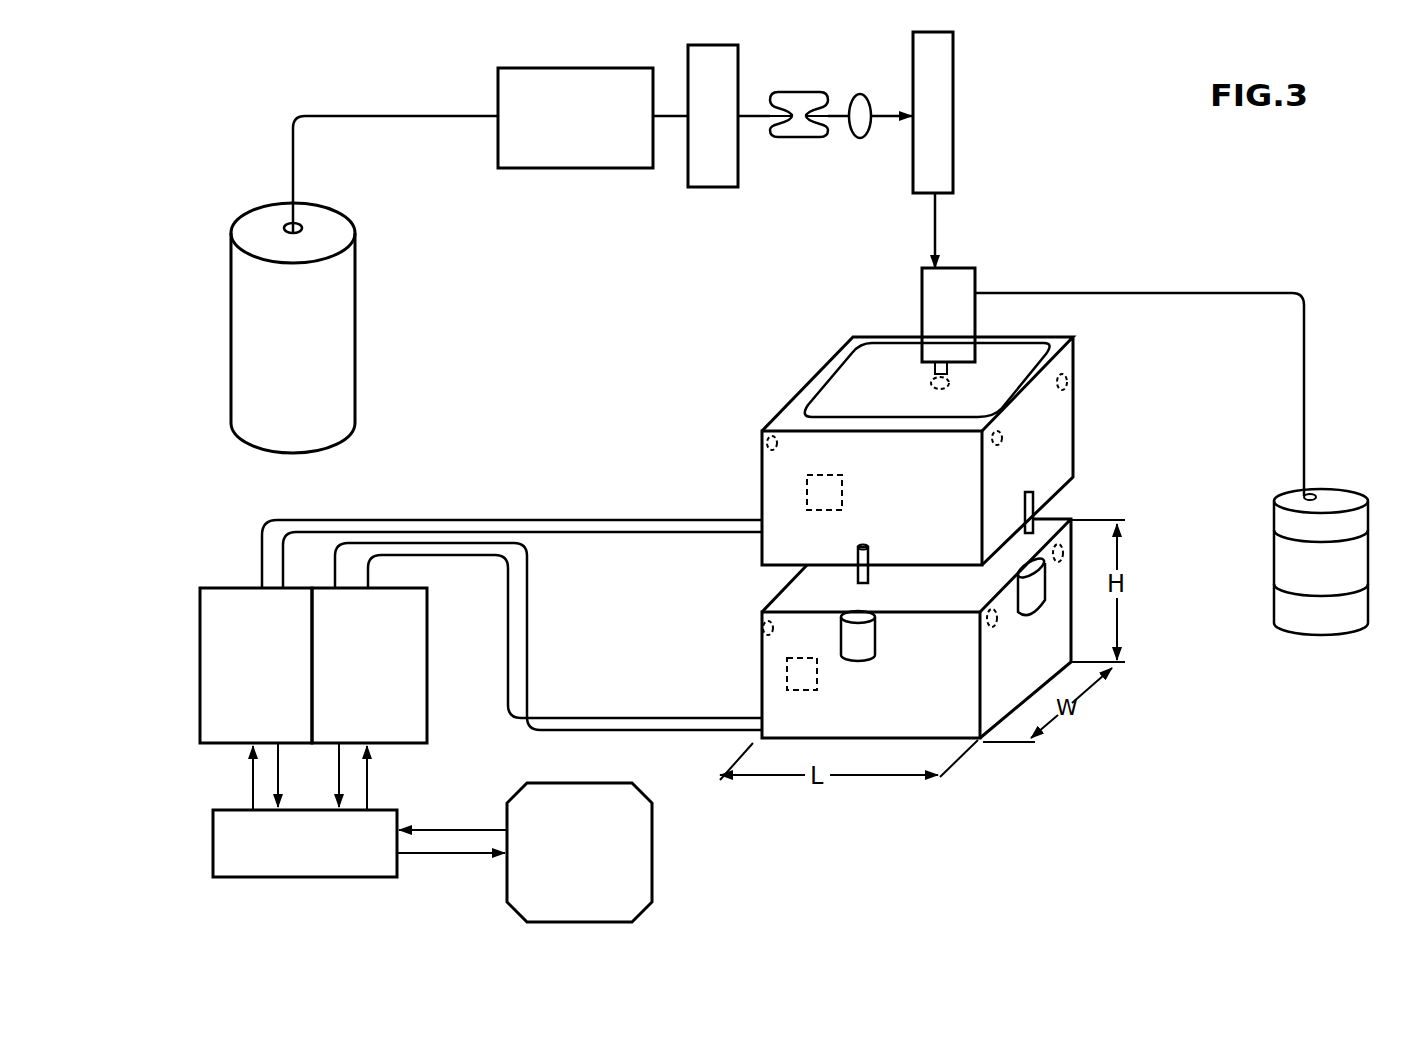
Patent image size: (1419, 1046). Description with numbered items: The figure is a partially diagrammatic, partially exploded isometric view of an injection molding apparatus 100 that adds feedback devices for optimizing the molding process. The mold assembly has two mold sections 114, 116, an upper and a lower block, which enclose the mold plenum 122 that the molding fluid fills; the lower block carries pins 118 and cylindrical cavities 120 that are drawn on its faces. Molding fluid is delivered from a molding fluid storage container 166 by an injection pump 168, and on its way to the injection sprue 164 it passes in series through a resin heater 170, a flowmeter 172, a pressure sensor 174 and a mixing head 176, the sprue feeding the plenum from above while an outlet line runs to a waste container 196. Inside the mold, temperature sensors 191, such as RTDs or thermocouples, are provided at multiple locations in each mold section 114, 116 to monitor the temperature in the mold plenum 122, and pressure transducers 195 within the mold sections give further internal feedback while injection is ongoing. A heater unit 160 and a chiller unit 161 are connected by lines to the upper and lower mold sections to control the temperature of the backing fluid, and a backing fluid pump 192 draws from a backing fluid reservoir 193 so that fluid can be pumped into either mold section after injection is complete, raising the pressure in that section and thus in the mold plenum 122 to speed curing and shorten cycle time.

The molding system 100 is at (1226, 240).
The mold section 114 is at (821, 368).
The mold section 116 is at (1008, 724).
The alignment pins 118 is at (868, 573).
The cylindrical cavities 120 is at (870, 652).
The mold plenum 122 is at (806, 589).
The heater unit 160 is at (200, 676).
The chiller unit 161 is at (427, 680).
The injection sprue 164 is at (957, 268).
The molding fluid storage container 166 is at (345, 306).
The injection pump 168 is at (550, 70).
The resin heater 170 is at (740, 50).
The flowmeter 172 is at (812, 95).
The pressure sensor 174 is at (859, 139).
The mixing head 176 is at (966, 63).
The temperature sensors 191 is at (930, 386).
The pump 192 is at (385, 877).
The backing fluid reservoir 193 is at (650, 896).
The pressure transducers 195 is at (845, 492).
The waste container 196 is at (1362, 596).